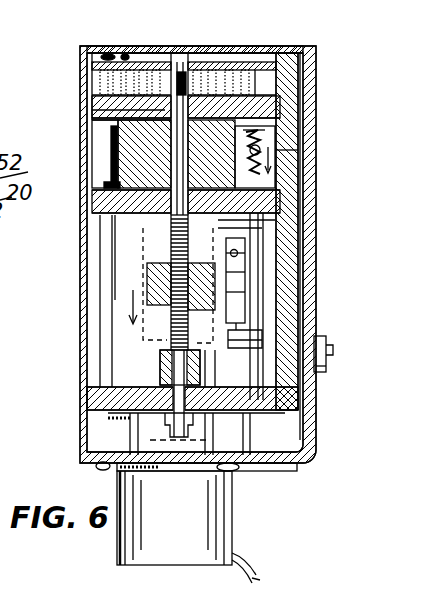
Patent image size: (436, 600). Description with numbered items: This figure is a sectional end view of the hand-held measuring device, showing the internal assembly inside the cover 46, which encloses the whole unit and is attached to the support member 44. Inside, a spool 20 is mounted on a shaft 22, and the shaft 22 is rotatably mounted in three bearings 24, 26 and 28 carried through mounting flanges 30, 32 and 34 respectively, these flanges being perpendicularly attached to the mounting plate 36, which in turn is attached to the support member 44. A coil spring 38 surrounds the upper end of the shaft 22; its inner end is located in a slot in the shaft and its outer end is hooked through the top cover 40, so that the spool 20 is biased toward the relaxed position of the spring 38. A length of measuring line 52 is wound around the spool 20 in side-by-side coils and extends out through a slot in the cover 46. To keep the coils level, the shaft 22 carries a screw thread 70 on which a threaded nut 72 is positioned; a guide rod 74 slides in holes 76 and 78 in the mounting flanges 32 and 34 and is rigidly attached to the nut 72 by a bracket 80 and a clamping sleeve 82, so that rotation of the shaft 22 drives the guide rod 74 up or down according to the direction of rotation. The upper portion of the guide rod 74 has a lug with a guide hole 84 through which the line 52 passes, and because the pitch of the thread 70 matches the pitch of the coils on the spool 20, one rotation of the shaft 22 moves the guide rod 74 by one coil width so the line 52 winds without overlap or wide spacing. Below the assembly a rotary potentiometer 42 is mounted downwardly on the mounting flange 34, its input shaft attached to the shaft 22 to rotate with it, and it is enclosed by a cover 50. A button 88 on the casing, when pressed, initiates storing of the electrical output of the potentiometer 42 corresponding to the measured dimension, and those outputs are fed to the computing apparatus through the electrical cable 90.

The spool 20 is at (177, 170).
The shaft 22 is at (87, 208).
The bearing 24 is at (90, 105).
The bearing 26 is at (165, 220).
The bearing 28 is at (168, 400).
The mounting flange 30 is at (276, 107).
The mounting flange 32 is at (251, 205).
The mounting flange 34 is at (270, 414).
The mounting plate 36 is at (290, 170).
The coil spring 38 is at (223, 70).
The top cover 40 is at (141, 53).
The rotary potentiometer 42 is at (205, 445).
The support member 44 is at (312, 257).
The cover 46 is at (92, 66).
The cover 50 is at (232, 498).
The measuring line 52 is at (110, 138).
The screw thread 70 is at (175, 248).
The threaded nut 72 is at (152, 272).
The guide rod 74 is at (250, 378).
The hole 76 is at (301, 228).
The hole 78 is at (228, 390).
The bracket 80 is at (192, 259).
The clamping sleeve 82 is at (261, 332).
The guide hole 84 is at (262, 146).
The button 88 is at (333, 367).
The electrical cable 90 is at (248, 568).